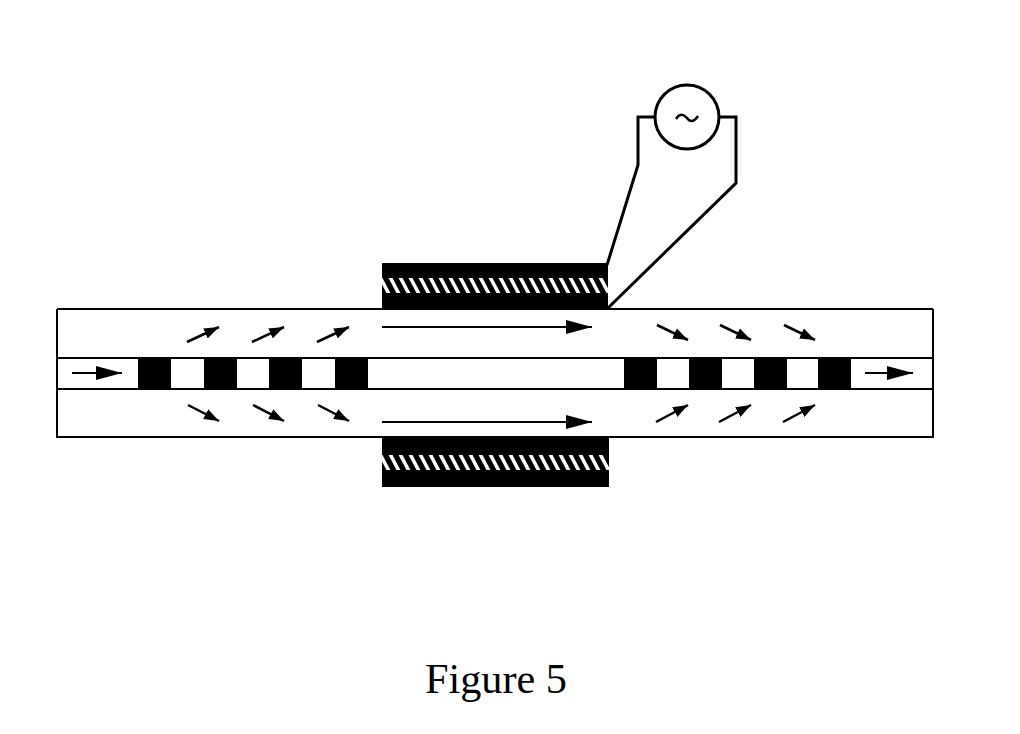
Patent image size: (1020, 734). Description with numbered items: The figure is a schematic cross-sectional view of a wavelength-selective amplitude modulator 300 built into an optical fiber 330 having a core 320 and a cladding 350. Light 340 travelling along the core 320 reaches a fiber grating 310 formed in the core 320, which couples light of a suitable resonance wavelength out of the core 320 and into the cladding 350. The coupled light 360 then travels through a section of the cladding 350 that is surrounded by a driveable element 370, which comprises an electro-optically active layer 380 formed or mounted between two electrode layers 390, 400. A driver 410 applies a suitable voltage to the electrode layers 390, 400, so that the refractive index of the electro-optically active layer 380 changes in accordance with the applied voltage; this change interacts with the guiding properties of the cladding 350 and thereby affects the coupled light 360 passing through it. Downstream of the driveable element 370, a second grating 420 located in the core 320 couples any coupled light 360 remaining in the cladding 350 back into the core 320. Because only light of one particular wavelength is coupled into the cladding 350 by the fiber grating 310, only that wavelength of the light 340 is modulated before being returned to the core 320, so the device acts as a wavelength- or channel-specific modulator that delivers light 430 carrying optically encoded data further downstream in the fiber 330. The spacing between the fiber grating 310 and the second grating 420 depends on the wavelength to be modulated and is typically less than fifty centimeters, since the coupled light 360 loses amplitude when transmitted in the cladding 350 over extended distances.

The wavelength-selective amplitude modulator 300 is at (187, 213).
The fiber grating 310 is at (287, 390).
The core 320 is at (73, 383).
The fiber 330 is at (738, 308).
The light 340 is at (92, 372).
The cladding 350 is at (140, 422).
The coupled light 360 is at (197, 415).
The driveable element 370 is at (495, 263).
The electro-optically active layer 380 is at (607, 462).
The electrode layer 390 is at (382, 447).
The electrode layer 400 is at (383, 487).
The driver 410 is at (703, 102).
The second grating 420 is at (802, 373).
The light 430 is at (882, 372).